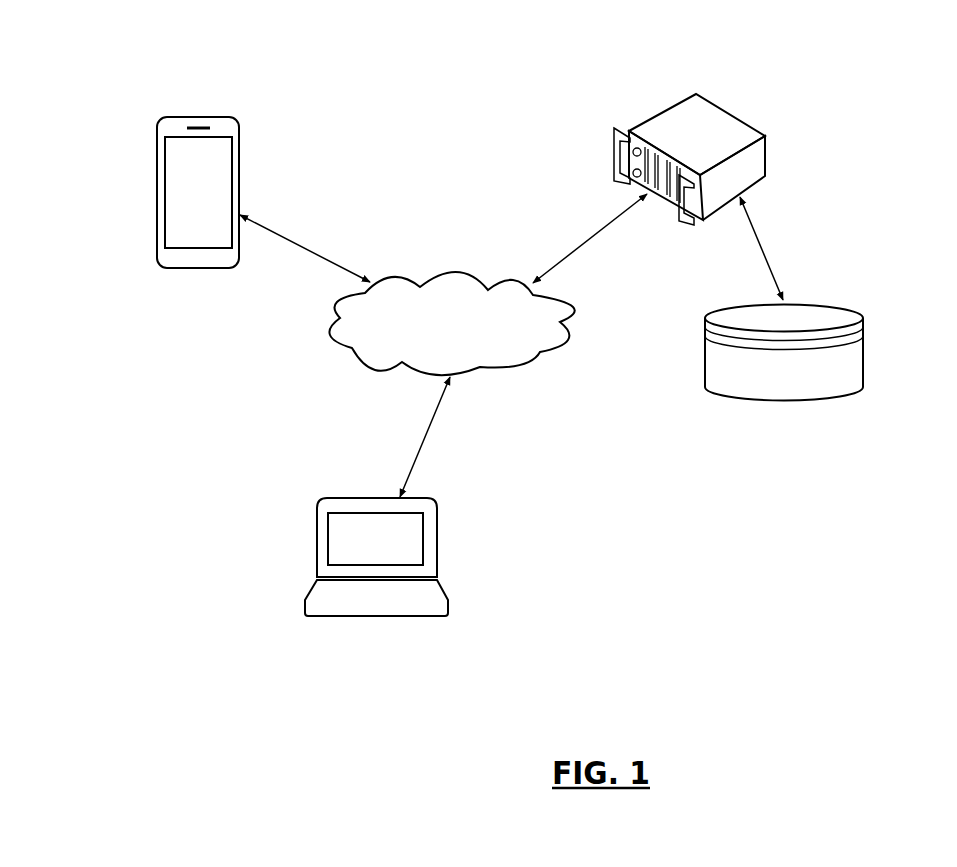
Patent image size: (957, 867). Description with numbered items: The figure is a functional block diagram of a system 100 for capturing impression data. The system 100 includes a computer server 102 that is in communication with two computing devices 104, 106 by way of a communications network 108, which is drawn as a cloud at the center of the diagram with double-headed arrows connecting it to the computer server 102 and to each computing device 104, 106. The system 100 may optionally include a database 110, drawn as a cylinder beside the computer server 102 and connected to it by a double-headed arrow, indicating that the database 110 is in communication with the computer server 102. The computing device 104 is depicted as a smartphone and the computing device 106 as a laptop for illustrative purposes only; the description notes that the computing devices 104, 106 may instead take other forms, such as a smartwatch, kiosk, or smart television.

The system 100 is at (440, 58).
The computer server 102 is at (696, 93).
The computing device 104 is at (198, 117).
The computing device 106 is at (437, 558).
The communications network 108 is at (448, 273).
The database 110 is at (865, 360).